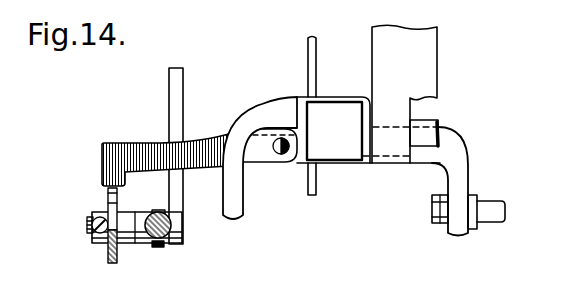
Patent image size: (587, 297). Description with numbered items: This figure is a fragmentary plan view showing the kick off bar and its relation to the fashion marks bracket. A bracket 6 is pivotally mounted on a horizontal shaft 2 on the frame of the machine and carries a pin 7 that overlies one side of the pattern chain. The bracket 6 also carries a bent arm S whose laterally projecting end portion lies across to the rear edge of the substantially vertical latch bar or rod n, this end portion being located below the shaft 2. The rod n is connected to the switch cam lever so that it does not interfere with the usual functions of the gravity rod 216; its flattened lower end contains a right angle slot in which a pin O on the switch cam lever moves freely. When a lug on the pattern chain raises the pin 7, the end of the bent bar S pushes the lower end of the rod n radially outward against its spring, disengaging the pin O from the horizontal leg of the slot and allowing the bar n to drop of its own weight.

The bent arm S is at (110, 153).
The bracket 6 is at (262, 117).
The horizontal shaft 2 is at (433, 120).
The pin 7 is at (488, 208).
The pin O is at (87, 222).
The latch bar n is at (107, 263).
The gravity rod 216 is at (182, 237).